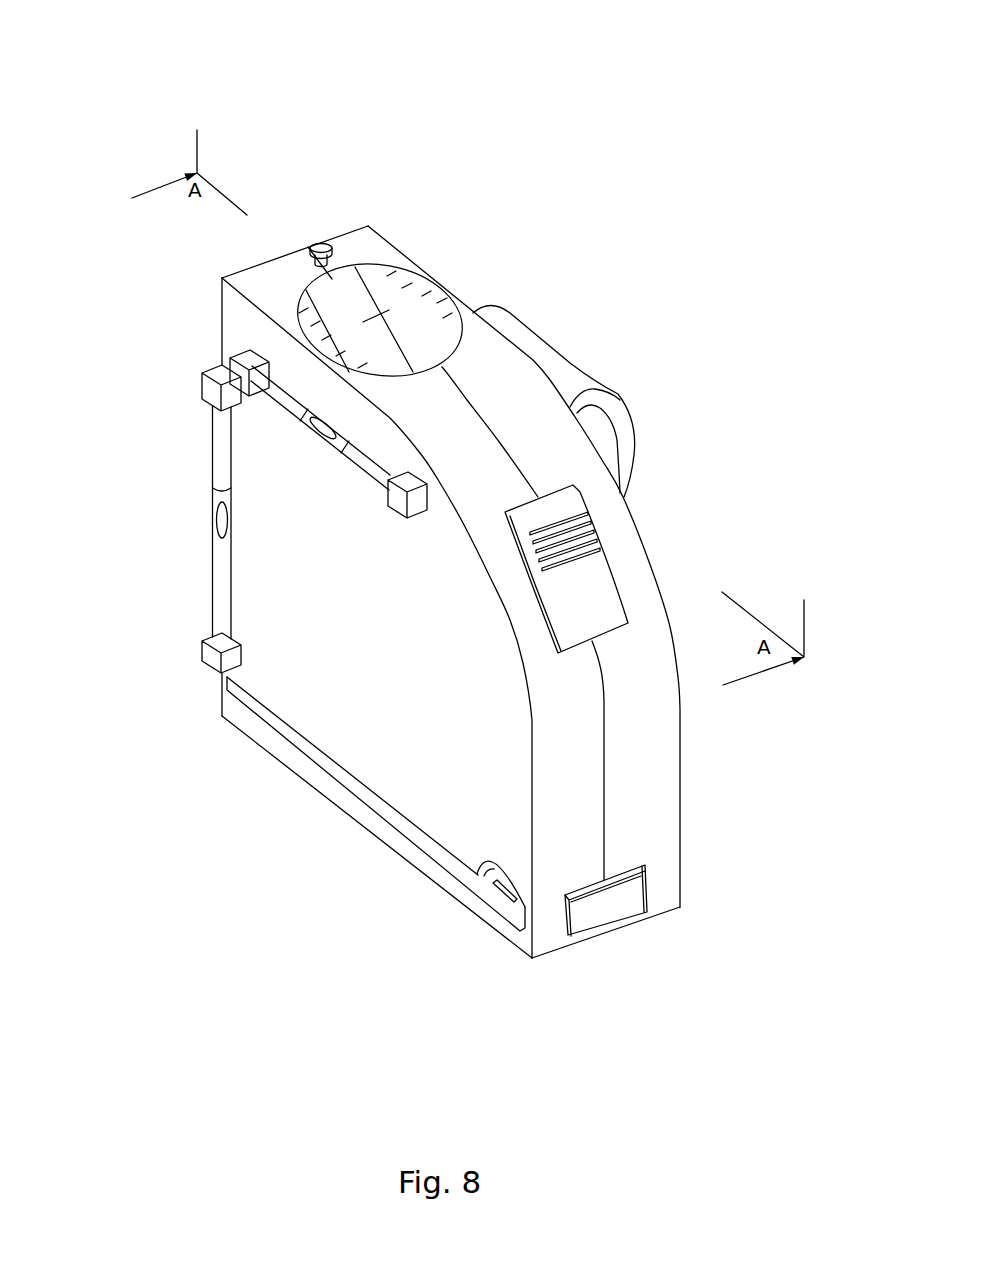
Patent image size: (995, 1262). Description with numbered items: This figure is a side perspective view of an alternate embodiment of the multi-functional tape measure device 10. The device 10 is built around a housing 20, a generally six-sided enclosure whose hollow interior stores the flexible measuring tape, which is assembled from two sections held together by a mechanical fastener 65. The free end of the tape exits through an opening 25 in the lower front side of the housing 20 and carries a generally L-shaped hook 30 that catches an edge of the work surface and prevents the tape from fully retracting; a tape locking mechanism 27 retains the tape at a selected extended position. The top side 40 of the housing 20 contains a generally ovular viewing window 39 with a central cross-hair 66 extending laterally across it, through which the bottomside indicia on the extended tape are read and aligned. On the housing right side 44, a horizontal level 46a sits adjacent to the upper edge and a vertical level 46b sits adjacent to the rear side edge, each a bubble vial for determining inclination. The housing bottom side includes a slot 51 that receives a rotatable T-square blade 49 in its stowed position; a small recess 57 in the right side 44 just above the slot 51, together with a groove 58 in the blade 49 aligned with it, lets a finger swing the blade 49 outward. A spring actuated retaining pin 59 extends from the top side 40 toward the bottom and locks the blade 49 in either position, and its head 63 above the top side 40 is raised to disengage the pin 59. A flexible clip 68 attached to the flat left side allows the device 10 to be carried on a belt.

The device 10 is at (700, 78).
The housing 20 is at (173, 639).
The opening 25 is at (645, 866).
The tape locking mechanism 27 is at (607, 578).
The hook 30 is at (583, 920).
The viewing window 39 is at (447, 284).
The top side 40 is at (375, 247).
The housing right side 44 is at (280, 698).
The horizontal level 46a is at (363, 459).
The vertical level 46b is at (223, 442).
The blade 49 is at (395, 813).
The slot 51 is at (303, 752).
The recess 57 is at (500, 860).
The groove 58 is at (487, 915).
The retaining pin 59 is at (320, 262).
The head 63 is at (319, 245).
The mechanical fastener 65 is at (445, 883).
The cross-hair 66 is at (389, 310).
The clip 68 is at (570, 365).